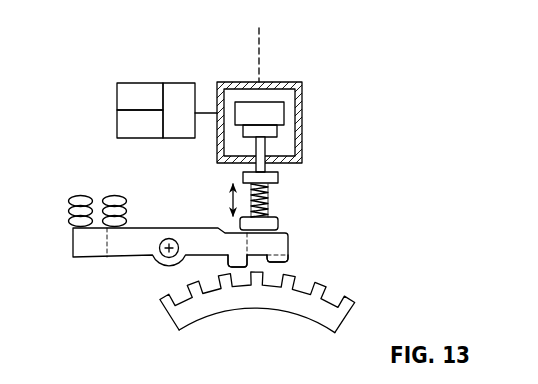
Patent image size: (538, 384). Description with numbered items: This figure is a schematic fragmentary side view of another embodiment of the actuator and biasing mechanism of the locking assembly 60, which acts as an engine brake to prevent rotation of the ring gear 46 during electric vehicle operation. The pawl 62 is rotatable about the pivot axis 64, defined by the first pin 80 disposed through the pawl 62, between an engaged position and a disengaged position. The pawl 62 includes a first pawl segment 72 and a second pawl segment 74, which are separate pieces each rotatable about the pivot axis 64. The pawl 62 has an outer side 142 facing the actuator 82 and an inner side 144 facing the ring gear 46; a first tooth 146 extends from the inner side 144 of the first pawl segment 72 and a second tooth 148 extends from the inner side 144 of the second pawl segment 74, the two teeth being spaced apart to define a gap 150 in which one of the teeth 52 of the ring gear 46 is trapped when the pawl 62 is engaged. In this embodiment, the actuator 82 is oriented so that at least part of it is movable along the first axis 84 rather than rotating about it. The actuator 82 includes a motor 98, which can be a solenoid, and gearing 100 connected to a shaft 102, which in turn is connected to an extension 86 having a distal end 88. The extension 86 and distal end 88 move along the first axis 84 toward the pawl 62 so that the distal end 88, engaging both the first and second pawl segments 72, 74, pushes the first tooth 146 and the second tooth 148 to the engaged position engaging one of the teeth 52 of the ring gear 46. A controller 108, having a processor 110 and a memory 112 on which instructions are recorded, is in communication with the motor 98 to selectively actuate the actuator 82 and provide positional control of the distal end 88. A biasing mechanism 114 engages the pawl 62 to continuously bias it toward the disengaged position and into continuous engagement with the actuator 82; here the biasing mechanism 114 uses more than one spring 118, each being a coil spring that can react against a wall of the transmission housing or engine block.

The ring gear 46 is at (317, 318).
The teeth 52 is at (285, 284).
The locking assembly 60 is at (341, 59).
The pawl 62 is at (311, 230).
The pivot axis 64 is at (160, 272).
The first pawl segment 72 is at (85, 253).
The second pawl segment 74 is at (228, 262).
The first pin 80 is at (173, 240).
The actuator 82 is at (293, 172).
The first axis 84 is at (261, 48).
The extension 86 is at (268, 202).
The distal end 88 is at (277, 222).
The motor 98 is at (287, 110).
The gearing 100 is at (280, 131).
The shaft 102 is at (250, 153).
The controller 108 is at (182, 82).
The processor 110 is at (152, 107).
The memory 112 is at (152, 134).
The biasing mechanism 114 is at (66, 160).
The spring 118 is at (113, 194).
The outer side 142 is at (144, 209).
The inner side 144 is at (110, 287).
The first tooth 146 is at (283, 262).
The second tooth 148 is at (238, 268).
The gap 150 is at (269, 250).